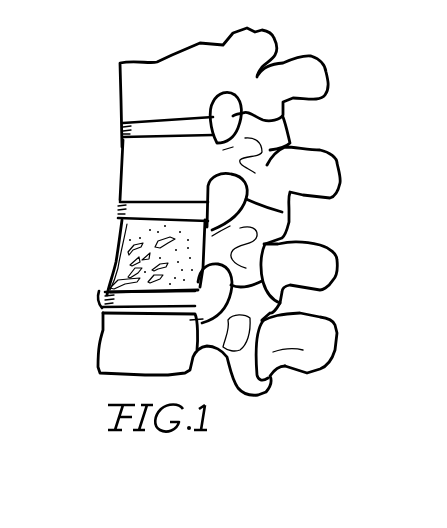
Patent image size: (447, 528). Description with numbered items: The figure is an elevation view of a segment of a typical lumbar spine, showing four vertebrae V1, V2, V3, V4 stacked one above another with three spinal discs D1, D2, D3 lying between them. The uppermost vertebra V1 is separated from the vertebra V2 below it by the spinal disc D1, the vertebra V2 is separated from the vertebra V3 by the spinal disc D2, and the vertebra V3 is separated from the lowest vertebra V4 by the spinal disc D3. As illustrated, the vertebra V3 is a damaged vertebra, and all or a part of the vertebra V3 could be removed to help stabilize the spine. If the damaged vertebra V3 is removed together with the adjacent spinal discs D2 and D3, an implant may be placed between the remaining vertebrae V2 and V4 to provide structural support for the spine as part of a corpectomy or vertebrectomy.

The vertebra V1 is at (328, 72).
The vertebra V2 is at (340, 168).
The damaged vertebra V3 is at (337, 258).
The vertebra V4 is at (337, 333).
The spinal disc D1 is at (120, 133).
The spinal disc D2 is at (120, 212).
The spinal disc D3 is at (105, 297).